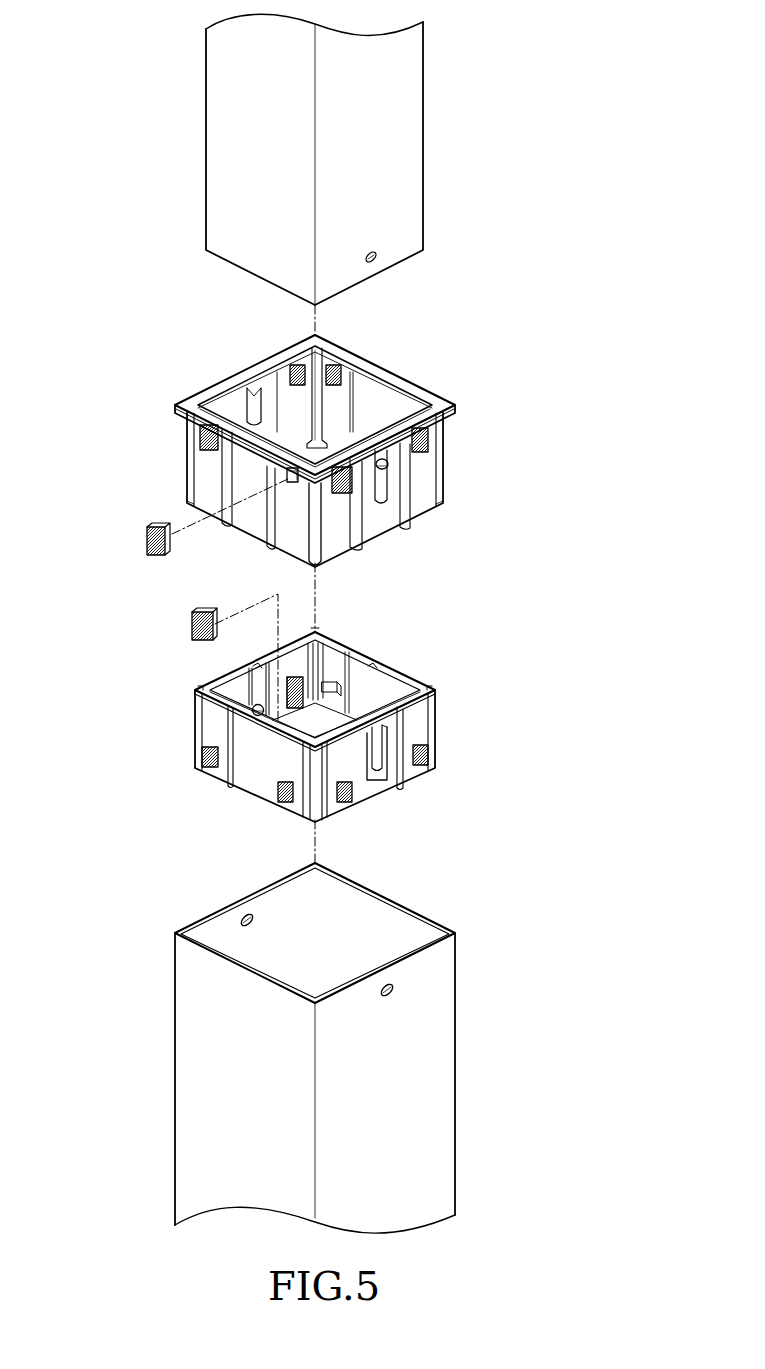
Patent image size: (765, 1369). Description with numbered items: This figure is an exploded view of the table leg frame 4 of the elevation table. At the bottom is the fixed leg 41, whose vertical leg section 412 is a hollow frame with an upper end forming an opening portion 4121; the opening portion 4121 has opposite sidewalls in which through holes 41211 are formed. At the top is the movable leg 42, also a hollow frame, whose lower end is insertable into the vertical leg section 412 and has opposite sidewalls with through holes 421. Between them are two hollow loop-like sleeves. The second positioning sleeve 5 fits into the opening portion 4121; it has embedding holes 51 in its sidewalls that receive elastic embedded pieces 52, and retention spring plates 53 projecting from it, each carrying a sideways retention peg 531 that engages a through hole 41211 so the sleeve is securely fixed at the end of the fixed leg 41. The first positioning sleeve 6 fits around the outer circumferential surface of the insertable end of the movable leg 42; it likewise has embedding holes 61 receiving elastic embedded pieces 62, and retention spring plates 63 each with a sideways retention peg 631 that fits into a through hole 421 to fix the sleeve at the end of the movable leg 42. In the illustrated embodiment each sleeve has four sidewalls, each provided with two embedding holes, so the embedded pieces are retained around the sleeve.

The table leg frame 4 is at (168, 136).
The movable leg 42 is at (418, 147).
The through holes 421 is at (376, 260).
The second positioning sleeve 5 is at (165, 455).
The embedding holes 51 is at (290, 481).
The embedded pieces 52 is at (295, 366).
The retention spring plates 53 is at (255, 404).
The retention peg 531 is at (390, 465).
The first positioning sleeve 6 is at (447, 709).
The embedding holes 61 is at (320, 685).
The embedded pieces 62 is at (192, 628).
The retention spring plates 63 is at (255, 686).
The retention peg 631 is at (262, 718).
The fixed leg 41 is at (477, 1106).
The vertical leg section 412 is at (440, 1150).
The opening portion 4121 is at (386, 920).
The through holes 41211 is at (255, 918).